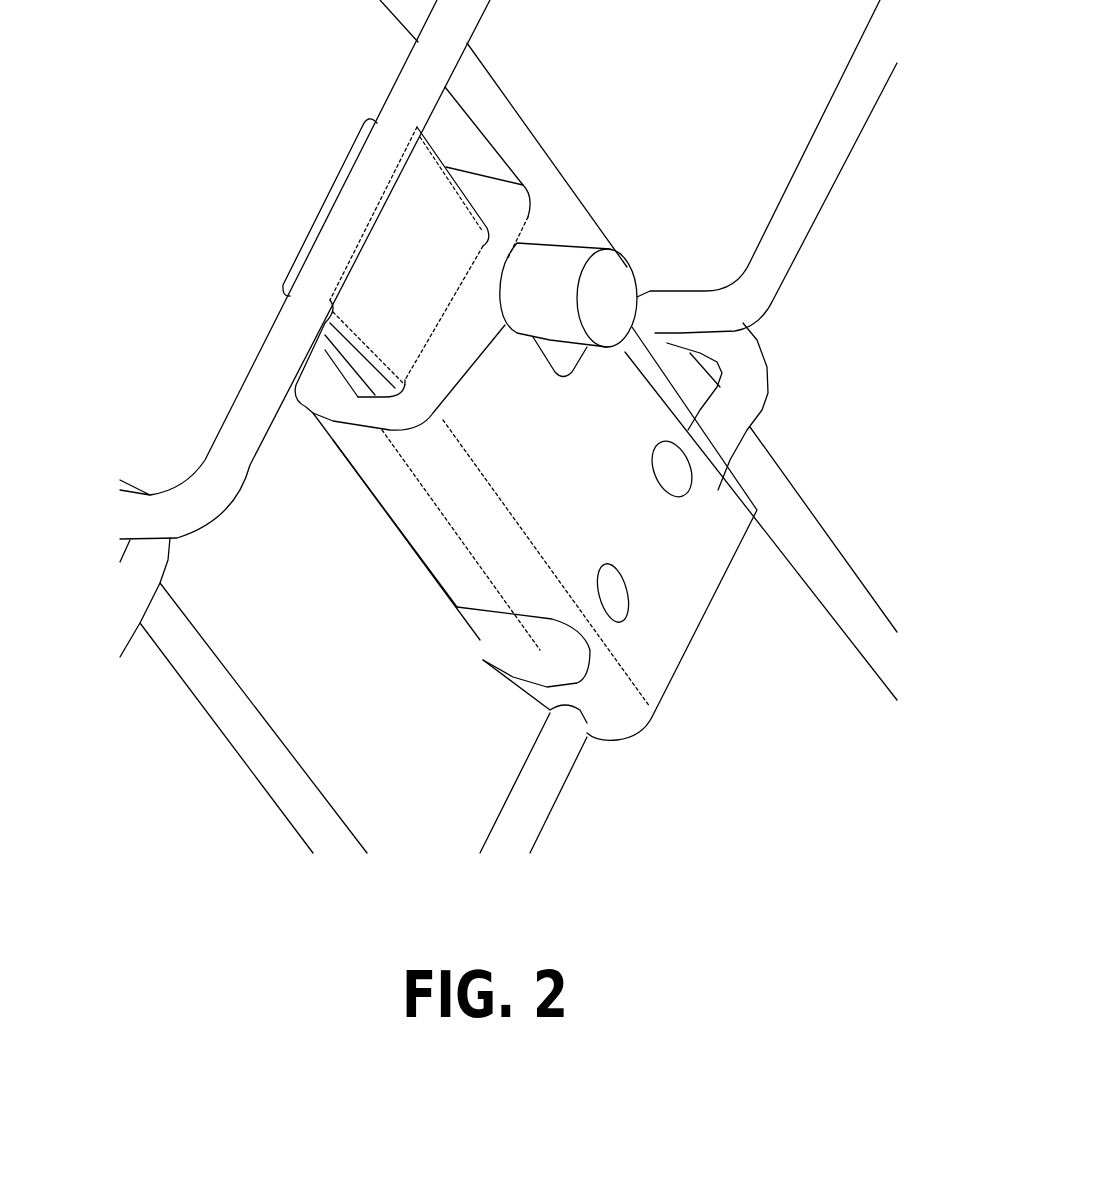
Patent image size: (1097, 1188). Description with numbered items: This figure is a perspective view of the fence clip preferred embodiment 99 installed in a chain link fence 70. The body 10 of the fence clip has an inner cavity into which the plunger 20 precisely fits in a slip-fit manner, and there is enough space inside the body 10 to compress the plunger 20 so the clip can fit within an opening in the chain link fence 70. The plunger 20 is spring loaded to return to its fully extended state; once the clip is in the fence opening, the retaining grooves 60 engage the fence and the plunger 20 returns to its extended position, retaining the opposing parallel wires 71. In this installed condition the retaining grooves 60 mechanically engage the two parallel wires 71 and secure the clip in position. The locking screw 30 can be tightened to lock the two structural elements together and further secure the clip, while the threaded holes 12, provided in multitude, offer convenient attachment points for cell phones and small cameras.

The body 10 is at (643, 647).
The threaded holes 12 is at (672, 472).
The plunger 20 is at (420, 217).
The locking screw 30 is at (557, 273).
The retaining groove 60 is at (343, 265).
The chain link fence 70 is at (290, 787).
The parallel wires 71 is at (270, 380).
The fence clip preferred embodiment 99 is at (641, 752).